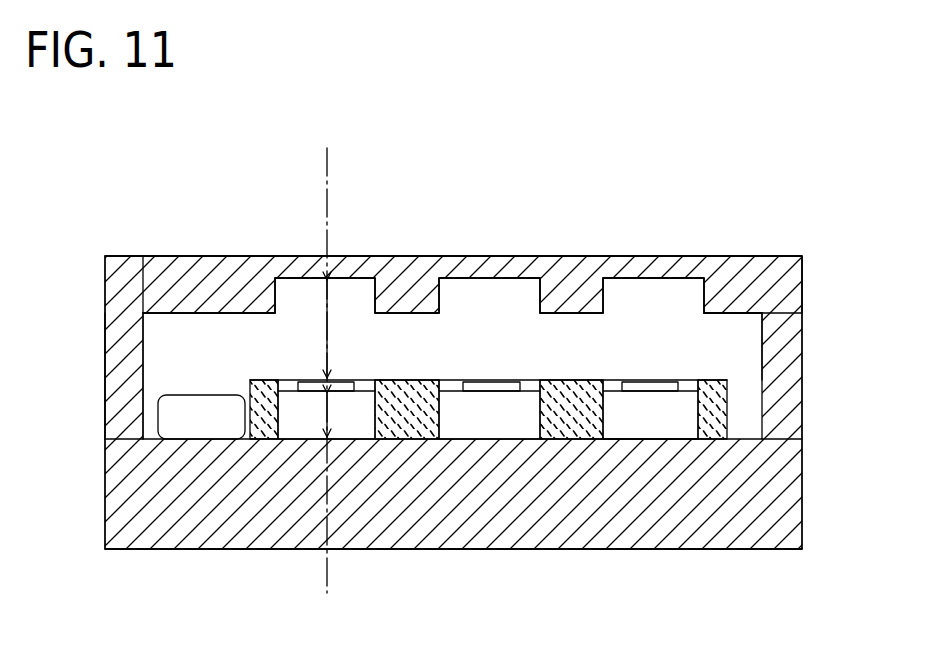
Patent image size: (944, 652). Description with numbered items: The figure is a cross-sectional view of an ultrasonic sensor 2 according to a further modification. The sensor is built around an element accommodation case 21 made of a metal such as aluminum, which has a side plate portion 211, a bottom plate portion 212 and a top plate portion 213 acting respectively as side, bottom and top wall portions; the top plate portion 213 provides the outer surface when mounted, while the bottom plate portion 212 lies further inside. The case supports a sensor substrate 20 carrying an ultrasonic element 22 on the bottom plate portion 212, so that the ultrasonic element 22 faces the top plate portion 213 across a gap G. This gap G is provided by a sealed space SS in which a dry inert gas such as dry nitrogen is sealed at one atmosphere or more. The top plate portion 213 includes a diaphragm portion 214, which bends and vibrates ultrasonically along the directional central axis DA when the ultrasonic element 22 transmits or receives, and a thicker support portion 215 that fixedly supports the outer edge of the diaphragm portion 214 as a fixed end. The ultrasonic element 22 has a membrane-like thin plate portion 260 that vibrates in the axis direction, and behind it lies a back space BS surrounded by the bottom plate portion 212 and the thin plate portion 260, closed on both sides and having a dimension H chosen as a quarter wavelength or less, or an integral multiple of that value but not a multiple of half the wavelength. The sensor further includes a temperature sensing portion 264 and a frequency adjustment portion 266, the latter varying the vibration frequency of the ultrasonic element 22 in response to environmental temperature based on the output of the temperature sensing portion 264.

The ultrasonic sensor 2 is at (808, 165).
The sensor substrate 20 is at (728, 378).
The element accommodation case 21 is at (800, 262).
The ultrasonic element 22 is at (365, 375).
The side plate portion 211 is at (112, 378).
The bottom plate portion 212 is at (113, 490).
The top plate portion 213 is at (112, 280).
The diaphragm portion 214 is at (345, 262).
The support portion 215 is at (175, 262).
The thin plate portion 260 is at (282, 383).
The temperature sensing portion 264 is at (168, 417).
The frequency adjustment portion 266 is at (341, 380).
The gap G is at (313, 329).
The dimension H is at (312, 415).
The sealed space SS is at (738, 325).
The back space BS is at (685, 407).
The direction axis DA is at (318, 590).